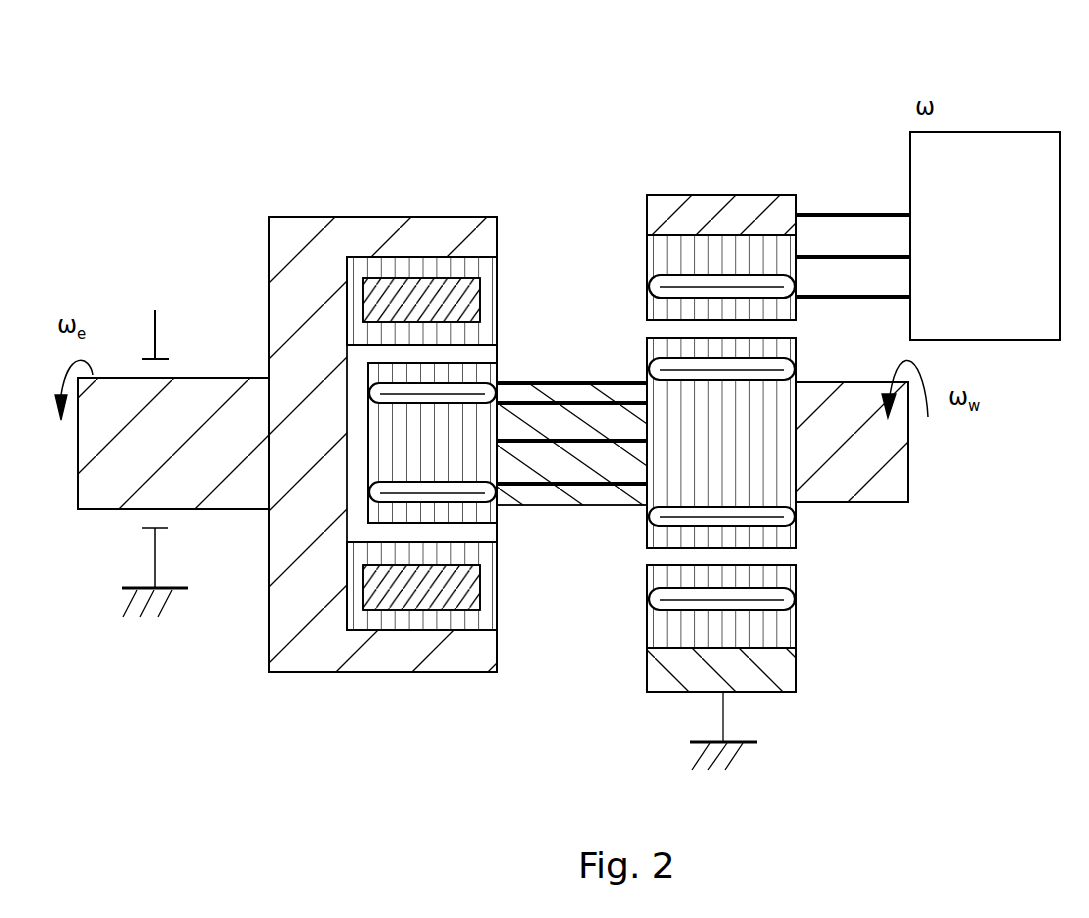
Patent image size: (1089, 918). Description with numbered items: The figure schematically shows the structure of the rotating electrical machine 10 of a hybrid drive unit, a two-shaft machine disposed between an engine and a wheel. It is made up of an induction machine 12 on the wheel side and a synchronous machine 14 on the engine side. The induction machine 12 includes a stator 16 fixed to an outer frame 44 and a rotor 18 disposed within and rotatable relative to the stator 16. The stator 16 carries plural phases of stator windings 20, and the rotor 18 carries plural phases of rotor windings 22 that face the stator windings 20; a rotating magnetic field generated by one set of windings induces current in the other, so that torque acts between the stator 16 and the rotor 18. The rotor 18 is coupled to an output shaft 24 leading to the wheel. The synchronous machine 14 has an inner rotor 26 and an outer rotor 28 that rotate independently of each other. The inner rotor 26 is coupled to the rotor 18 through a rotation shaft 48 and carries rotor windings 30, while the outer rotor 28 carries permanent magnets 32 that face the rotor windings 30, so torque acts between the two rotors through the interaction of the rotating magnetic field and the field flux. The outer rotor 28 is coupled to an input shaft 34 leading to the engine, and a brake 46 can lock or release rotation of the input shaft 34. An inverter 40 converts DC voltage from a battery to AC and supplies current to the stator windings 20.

The rotating electrical machine 10 is at (265, 143).
The induction machine 12 is at (796, 163).
The synchronous machine 14 is at (497, 163).
The stator 16 is at (660, 250).
The rotor 18 is at (780, 465).
The stator windings 20 is at (658, 288).
The rotor windings 22 is at (660, 370).
The output shaft 24 is at (888, 470).
The rotor 26 is at (480, 461).
The rotor 28 is at (482, 553).
The rotor windings 30 is at (473, 393).
The permanent magnets 32 is at (465, 298).
The input shaft 34 is at (228, 502).
The inverter 40 is at (990, 130).
The outer frame 44 is at (750, 735).
The brake 46 is at (145, 529).
The rotation shaft 48 is at (598, 498).